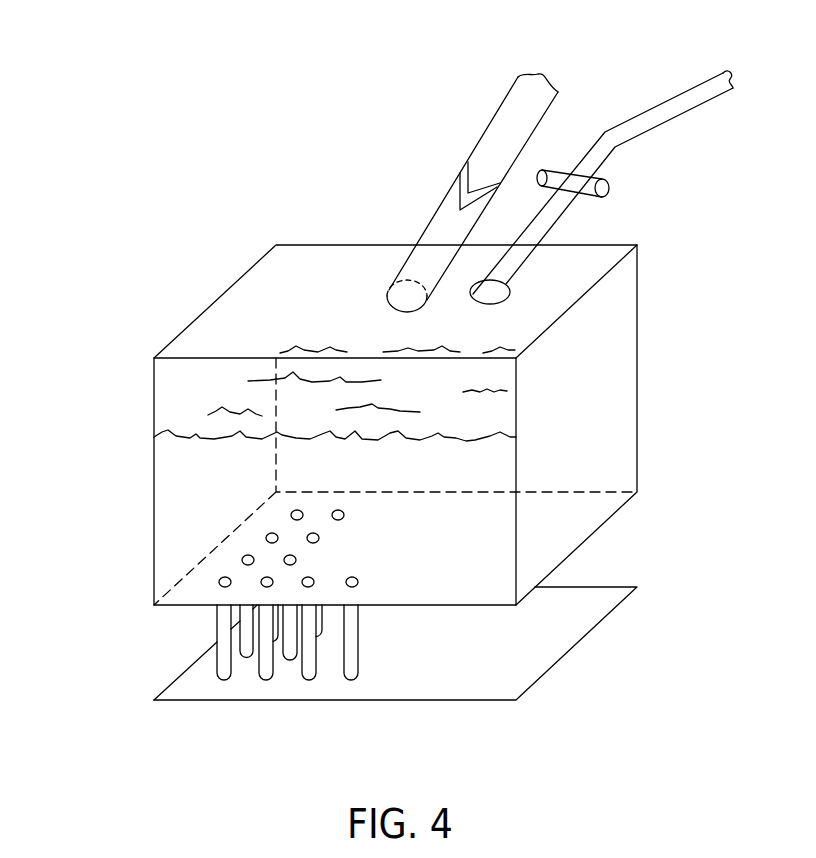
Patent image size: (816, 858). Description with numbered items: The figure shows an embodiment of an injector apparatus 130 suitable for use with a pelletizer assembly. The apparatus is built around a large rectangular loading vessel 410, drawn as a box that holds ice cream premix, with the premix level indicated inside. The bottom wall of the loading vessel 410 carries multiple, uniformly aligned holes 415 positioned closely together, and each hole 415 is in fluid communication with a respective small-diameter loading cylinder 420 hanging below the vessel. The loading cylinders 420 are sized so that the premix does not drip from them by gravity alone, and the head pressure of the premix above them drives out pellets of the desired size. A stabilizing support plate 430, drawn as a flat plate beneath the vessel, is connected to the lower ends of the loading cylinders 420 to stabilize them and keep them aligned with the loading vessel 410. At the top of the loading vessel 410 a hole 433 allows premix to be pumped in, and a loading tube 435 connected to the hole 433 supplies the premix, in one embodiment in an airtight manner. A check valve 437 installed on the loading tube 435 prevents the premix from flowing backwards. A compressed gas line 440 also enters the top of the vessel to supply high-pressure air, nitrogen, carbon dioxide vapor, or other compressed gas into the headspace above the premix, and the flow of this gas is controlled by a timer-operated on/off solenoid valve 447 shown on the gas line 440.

The injector apparatus 130 is at (198, 58).
The loading vessel 410 is at (637, 382).
The holes 415 is at (242, 558).
The loading cylinder 420 is at (243, 637).
The stabilizing support plate 430 is at (577, 645).
The hole 433 is at (390, 299).
The loading tube 435 is at (503, 102).
The check valve 437 is at (458, 197).
The compressed gas line 440 is at (629, 118).
The solenoid valve 447 is at (608, 185).